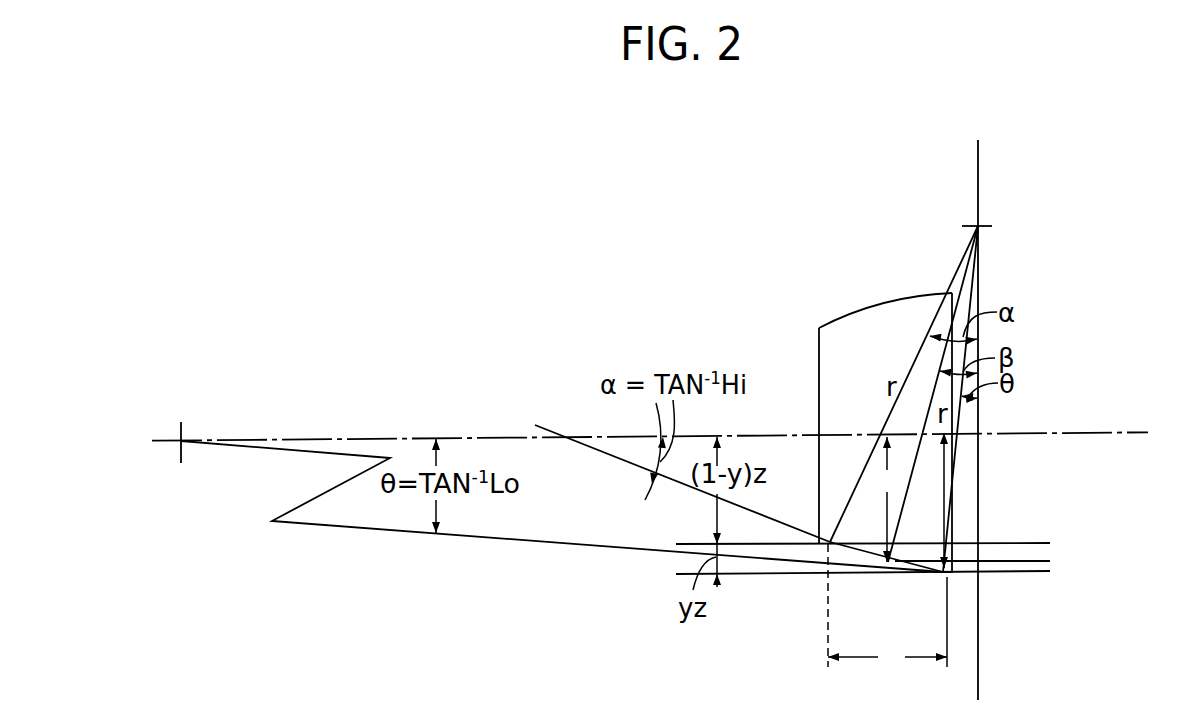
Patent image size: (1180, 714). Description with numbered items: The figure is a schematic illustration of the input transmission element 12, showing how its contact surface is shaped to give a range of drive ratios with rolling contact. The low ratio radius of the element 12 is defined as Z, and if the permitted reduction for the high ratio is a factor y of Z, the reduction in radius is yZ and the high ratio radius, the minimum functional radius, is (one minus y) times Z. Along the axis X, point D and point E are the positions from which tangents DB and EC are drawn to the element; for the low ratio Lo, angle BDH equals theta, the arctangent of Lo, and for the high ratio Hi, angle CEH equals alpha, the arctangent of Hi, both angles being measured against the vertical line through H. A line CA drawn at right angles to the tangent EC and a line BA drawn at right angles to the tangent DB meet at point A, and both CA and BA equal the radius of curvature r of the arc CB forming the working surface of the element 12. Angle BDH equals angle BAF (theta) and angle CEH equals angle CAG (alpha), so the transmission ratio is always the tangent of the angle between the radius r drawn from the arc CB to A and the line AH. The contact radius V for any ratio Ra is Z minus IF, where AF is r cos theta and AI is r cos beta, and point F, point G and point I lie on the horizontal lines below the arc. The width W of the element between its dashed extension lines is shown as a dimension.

The input transmission element 12 is at (868, 333).
The point A is at (983, 210).
The point B is at (938, 578).
The point C is at (830, 540).
The point D is at (194, 434).
The point E is at (682, 473).
The point F is at (987, 577).
The point G is at (984, 540).
The point H is at (996, 415).
The point I is at (987, 558).
The axis X- X is at (649, 437).
The contact radius V is at (887, 499).
The low ratio radius Z is at (934, 500).
The width W is at (887, 608).